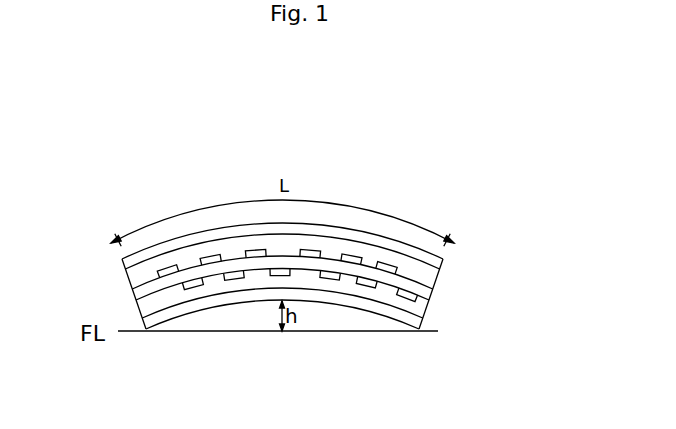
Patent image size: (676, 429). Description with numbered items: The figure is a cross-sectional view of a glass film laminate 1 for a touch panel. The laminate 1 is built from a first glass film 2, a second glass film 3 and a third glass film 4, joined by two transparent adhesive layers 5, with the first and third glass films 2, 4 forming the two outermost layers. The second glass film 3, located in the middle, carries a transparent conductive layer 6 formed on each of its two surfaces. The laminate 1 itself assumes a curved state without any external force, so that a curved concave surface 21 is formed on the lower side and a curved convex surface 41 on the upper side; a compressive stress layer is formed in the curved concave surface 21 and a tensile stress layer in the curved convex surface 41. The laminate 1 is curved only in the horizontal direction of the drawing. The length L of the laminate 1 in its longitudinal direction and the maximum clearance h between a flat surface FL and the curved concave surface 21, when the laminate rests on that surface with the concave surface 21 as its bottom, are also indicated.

The glass film laminate for a touch panel 1 is at (315, 248).
The first glass film 2 is at (303, 353).
The curved concave surface 21 is at (388, 318).
The second glass film 3 is at (312, 278).
The third glass film 4 is at (315, 228).
The curved convex surface 41 is at (410, 243).
The transparent adhesive layer 5 is at (438, 278).
The transparent conductive layer 6 is at (389, 262).